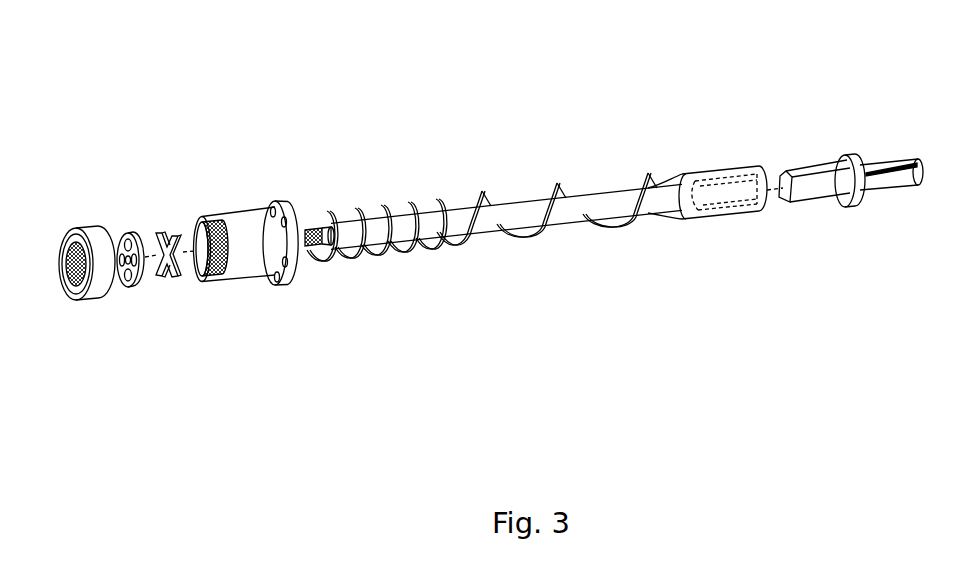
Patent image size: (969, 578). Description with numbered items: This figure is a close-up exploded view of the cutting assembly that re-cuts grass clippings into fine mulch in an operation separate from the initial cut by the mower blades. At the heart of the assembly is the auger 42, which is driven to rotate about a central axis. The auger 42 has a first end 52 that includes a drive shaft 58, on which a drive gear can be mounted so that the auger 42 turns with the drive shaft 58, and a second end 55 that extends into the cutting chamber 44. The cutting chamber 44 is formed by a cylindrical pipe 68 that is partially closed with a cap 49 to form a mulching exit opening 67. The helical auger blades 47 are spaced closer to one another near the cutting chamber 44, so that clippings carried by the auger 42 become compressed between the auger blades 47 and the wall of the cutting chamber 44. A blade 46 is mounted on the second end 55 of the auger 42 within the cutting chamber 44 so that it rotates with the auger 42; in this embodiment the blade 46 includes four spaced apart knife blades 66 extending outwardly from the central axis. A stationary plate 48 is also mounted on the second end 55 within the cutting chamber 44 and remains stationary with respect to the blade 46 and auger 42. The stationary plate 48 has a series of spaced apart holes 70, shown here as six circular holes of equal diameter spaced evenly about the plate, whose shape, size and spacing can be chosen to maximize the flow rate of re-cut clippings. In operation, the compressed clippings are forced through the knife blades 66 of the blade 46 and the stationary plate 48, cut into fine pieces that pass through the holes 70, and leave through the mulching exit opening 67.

The auger 42 is at (784, 271).
The cutting chamber 44 is at (247, 238).
The blade 46 is at (168, 280).
The auger blades 47 is at (480, 202).
The stationary plate 48 is at (123, 313).
The cap 49 is at (58, 232).
The first end 52 is at (752, 210).
The second end 55 is at (322, 243).
The drive shaft 58 is at (813, 177).
The knife blades 66 is at (178, 252).
The mulching exit opening 67 is at (70, 287).
The cylindrical pipe 68 is at (245, 238).
The holes 70 is at (128, 235).